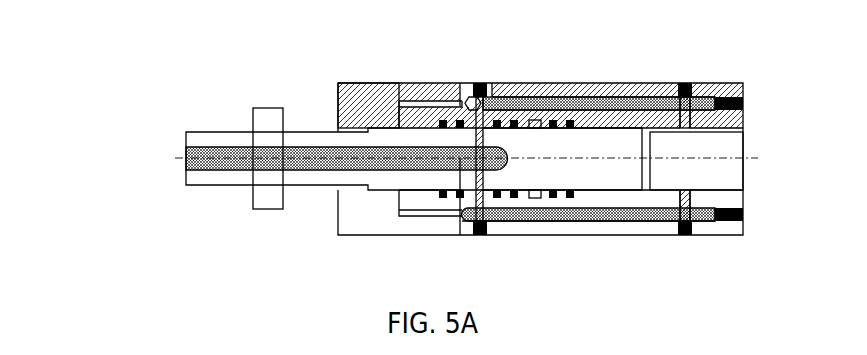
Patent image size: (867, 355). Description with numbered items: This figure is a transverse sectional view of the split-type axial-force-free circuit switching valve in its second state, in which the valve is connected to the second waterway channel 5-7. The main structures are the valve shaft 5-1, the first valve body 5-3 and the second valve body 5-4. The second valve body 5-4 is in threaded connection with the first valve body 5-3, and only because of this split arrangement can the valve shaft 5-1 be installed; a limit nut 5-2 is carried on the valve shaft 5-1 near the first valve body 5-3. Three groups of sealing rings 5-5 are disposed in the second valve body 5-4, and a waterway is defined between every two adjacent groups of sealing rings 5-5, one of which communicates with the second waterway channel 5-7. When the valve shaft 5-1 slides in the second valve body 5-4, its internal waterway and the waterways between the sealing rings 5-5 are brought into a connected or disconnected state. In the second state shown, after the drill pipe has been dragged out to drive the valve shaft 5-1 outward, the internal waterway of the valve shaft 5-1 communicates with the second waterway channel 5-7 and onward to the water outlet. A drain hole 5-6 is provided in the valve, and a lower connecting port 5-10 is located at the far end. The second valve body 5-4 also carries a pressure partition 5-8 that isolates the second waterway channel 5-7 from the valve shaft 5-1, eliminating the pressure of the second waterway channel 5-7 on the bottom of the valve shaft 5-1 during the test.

The valve shaft 5-1 is at (220, 158).
The limit nut 5-2 is at (258, 118).
The first valve body 5-3 is at (358, 105).
The second valve body 5-4 is at (450, 104).
The sealing rings 5-5 is at (538, 101).
The drain hole 5-6 is at (600, 58).
The second waterway channel 5-7 is at (588, 213).
The pressure partition 5-8 is at (685, 98).
The lower connecting port 5-10 is at (720, 158).